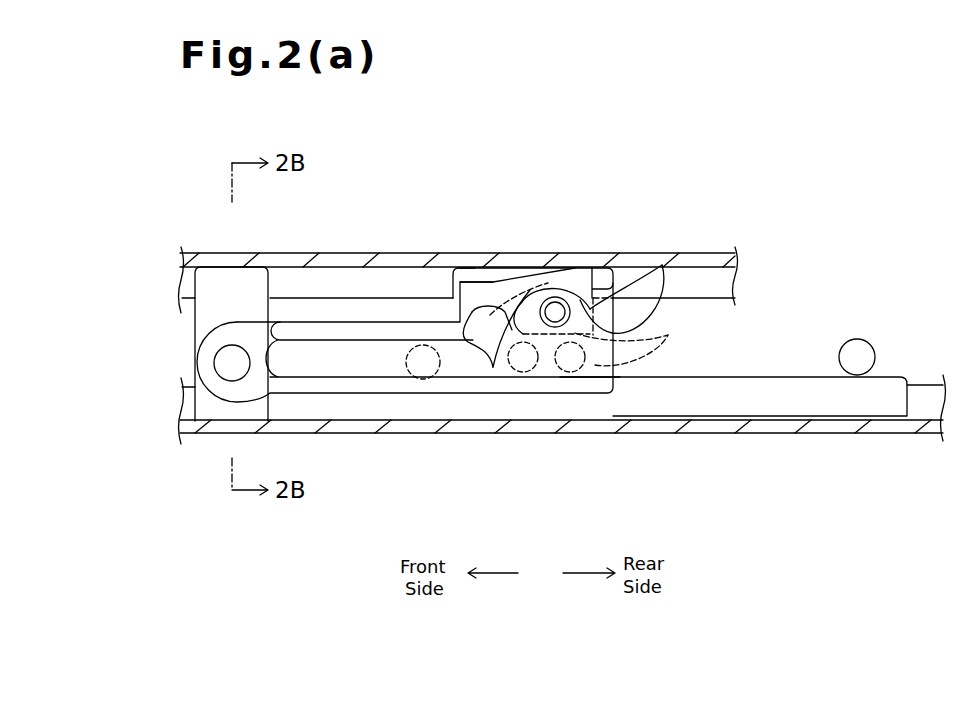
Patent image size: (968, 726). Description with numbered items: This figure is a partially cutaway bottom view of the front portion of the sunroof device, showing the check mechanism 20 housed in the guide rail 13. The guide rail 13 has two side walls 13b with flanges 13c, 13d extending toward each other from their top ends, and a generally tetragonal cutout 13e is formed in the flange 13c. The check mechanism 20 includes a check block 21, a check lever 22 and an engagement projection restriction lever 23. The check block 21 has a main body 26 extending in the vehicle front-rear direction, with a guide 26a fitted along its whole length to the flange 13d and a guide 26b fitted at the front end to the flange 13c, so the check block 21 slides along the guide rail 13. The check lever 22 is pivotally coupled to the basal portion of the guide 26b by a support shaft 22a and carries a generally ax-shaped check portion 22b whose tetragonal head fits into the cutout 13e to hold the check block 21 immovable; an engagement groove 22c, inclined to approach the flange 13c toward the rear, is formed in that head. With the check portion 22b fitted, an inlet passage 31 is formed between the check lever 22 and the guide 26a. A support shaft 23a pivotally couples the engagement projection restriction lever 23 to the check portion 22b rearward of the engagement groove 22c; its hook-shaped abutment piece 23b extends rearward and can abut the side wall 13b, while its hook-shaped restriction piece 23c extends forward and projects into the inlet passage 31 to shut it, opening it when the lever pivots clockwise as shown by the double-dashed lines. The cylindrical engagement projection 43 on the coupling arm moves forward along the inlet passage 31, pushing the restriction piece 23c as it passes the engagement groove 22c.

The guide rail 13 is at (570, 347).
The side wall 13b is at (622, 258).
The flange 13c is at (703, 297).
The flange 13d is at (927, 397).
The cutout 13e is at (463, 268).
The check mechanism 20 is at (368, 234).
The check block 21 is at (551, 349).
The check lever 22 is at (374, 304).
The support shaft 22a is at (232, 363).
The check portion 22b is at (500, 276).
The engagement groove 22c is at (466, 336).
The engagement projection restriction lever 23 is at (593, 342).
The support shaft 23a is at (556, 305).
The abutment piece 23b is at (665, 268).
The restriction piece 23c is at (493, 367).
The main body 26 is at (551, 349).
The guide 26a is at (578, 410).
The guide 26b is at (230, 277).
The inlet passage 31 is at (362, 340).
The engagement projection 43 is at (405, 358).